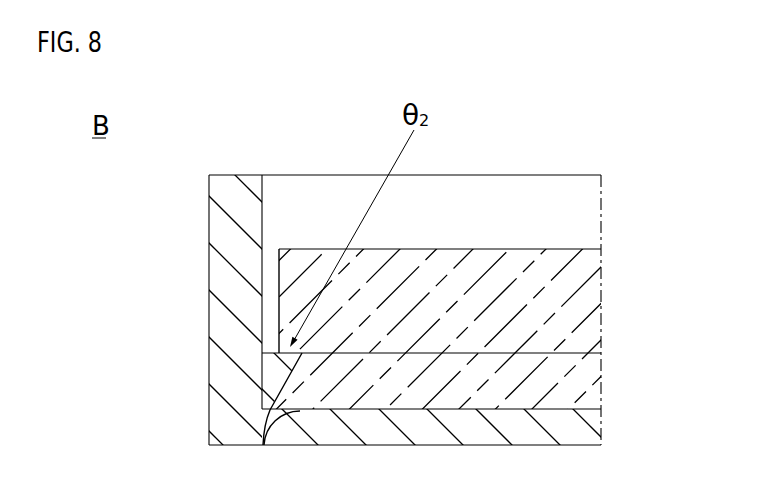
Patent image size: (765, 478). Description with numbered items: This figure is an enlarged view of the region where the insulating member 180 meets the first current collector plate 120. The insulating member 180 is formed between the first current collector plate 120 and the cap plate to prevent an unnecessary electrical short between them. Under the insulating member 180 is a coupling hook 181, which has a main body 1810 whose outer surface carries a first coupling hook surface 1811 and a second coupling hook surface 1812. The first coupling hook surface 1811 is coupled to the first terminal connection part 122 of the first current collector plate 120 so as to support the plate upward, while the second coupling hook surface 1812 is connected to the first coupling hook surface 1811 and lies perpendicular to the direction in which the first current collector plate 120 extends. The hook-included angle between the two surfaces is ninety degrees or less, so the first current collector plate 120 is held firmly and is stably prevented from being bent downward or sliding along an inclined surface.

The insulating member 180 is at (200, 216).
The coupling hook 181 is at (104, 282).
The main body 1810 is at (238, 385).
The first coupling hook surface 1811 is at (284, 343).
The second coupling hook surface 1812 is at (262, 297).
The first current collector plate 120 is at (608, 328).
The first terminal connection part 122 is at (557, 283).